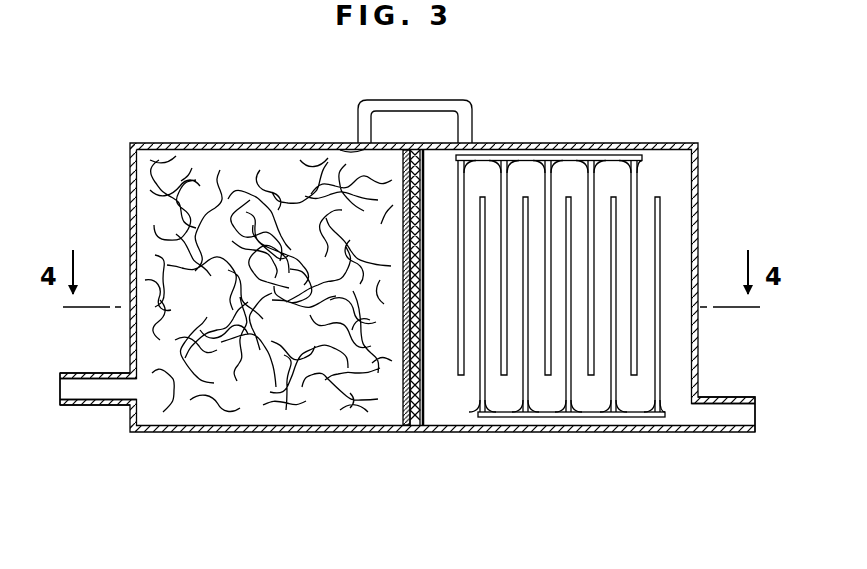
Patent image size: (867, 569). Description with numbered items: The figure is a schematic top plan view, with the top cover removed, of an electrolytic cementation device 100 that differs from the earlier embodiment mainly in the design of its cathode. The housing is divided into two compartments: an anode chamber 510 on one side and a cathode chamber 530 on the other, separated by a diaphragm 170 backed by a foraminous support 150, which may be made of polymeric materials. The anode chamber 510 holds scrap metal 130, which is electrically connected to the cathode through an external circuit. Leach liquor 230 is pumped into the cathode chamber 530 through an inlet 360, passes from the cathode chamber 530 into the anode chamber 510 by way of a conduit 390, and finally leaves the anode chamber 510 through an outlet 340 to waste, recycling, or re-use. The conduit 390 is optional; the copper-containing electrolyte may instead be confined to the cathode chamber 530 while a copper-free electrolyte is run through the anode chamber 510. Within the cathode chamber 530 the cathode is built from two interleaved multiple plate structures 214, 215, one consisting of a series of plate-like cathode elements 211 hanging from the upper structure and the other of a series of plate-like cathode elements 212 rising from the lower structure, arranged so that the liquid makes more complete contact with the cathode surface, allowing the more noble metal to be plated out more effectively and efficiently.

The cementation device 100 is at (709, 179).
The scrap metal 130 is at (208, 180).
The foraminous support 150 is at (408, 420).
The diaphragm 170 is at (426, 403).
The hanging baffle plates 211 is at (625, 165).
The plate-like cathode elements 212 is at (655, 405).
The multiple plate structure 214 is at (547, 418).
The multiple plate structure 215 is at (543, 156).
The leach liquor 230 is at (665, 237).
The outlet 340 is at (97, 382).
The inlet 360 is at (727, 410).
The conduit 390 is at (380, 103).
The anode chamber 510 is at (252, 271).
The cathode chamber 530 is at (688, 190).